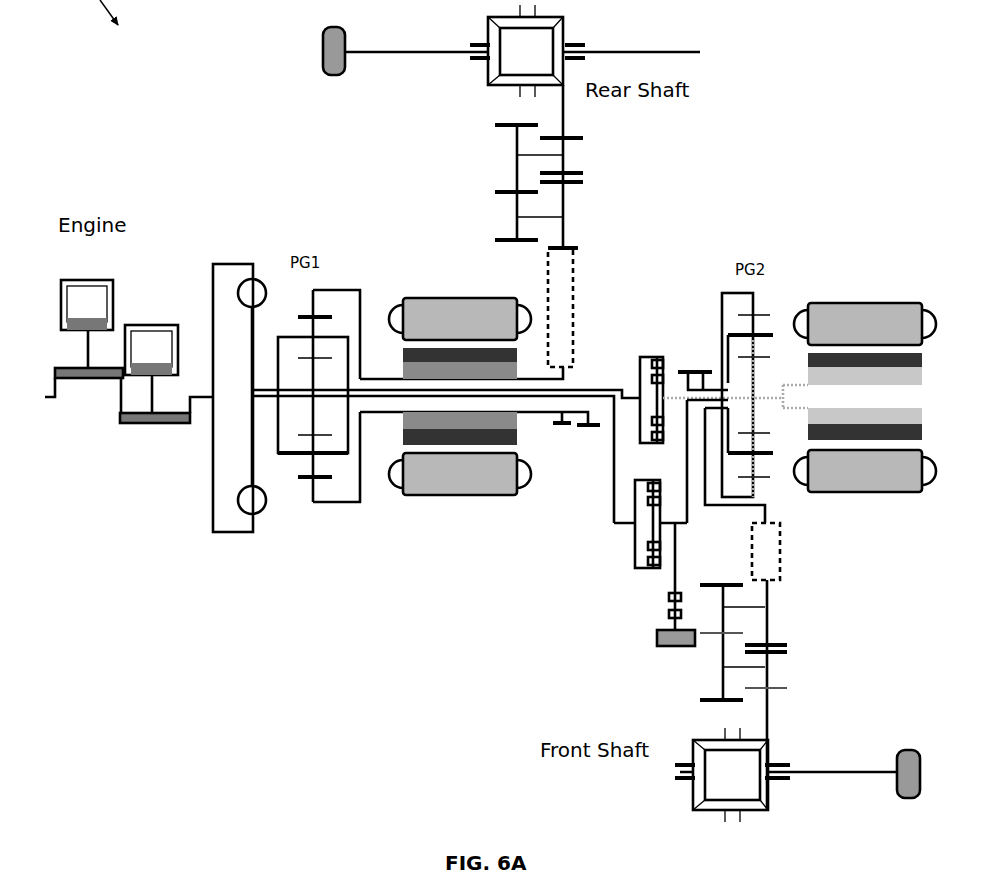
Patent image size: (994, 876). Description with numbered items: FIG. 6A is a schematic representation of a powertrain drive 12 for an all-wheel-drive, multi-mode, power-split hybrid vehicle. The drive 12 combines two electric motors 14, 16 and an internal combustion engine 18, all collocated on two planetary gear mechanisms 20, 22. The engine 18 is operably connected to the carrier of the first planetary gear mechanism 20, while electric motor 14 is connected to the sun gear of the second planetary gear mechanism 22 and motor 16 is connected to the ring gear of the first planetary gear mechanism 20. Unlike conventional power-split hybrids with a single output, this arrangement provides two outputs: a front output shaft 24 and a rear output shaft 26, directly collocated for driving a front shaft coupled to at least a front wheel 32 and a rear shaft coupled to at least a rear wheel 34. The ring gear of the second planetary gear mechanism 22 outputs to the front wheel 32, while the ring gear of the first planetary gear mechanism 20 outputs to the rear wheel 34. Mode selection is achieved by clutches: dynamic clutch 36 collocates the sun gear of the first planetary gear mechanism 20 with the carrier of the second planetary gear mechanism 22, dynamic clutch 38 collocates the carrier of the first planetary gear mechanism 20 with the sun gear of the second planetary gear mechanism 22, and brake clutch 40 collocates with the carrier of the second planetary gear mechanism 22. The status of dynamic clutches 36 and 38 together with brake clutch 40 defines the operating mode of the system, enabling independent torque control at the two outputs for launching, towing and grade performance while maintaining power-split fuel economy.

The drive 12 is at (233, 130).
The electric motor 14 is at (858, 300).
The electric motor 16 is at (452, 298).
The internal combustion engine 18 is at (155, 268).
The first planetary gear mechanism 20 is at (333, 258).
The second planetary gear mechanism 22 is at (755, 252).
The front output shaft 24 is at (838, 637).
The rear output shaft 26 is at (600, 180).
The front wheel 32 is at (916, 737).
The rear wheel 34 is at (325, 85).
The dynamic clutch 36 is at (632, 533).
The dynamic clutch 38 is at (658, 312).
The brake clutch 40 is at (650, 645).